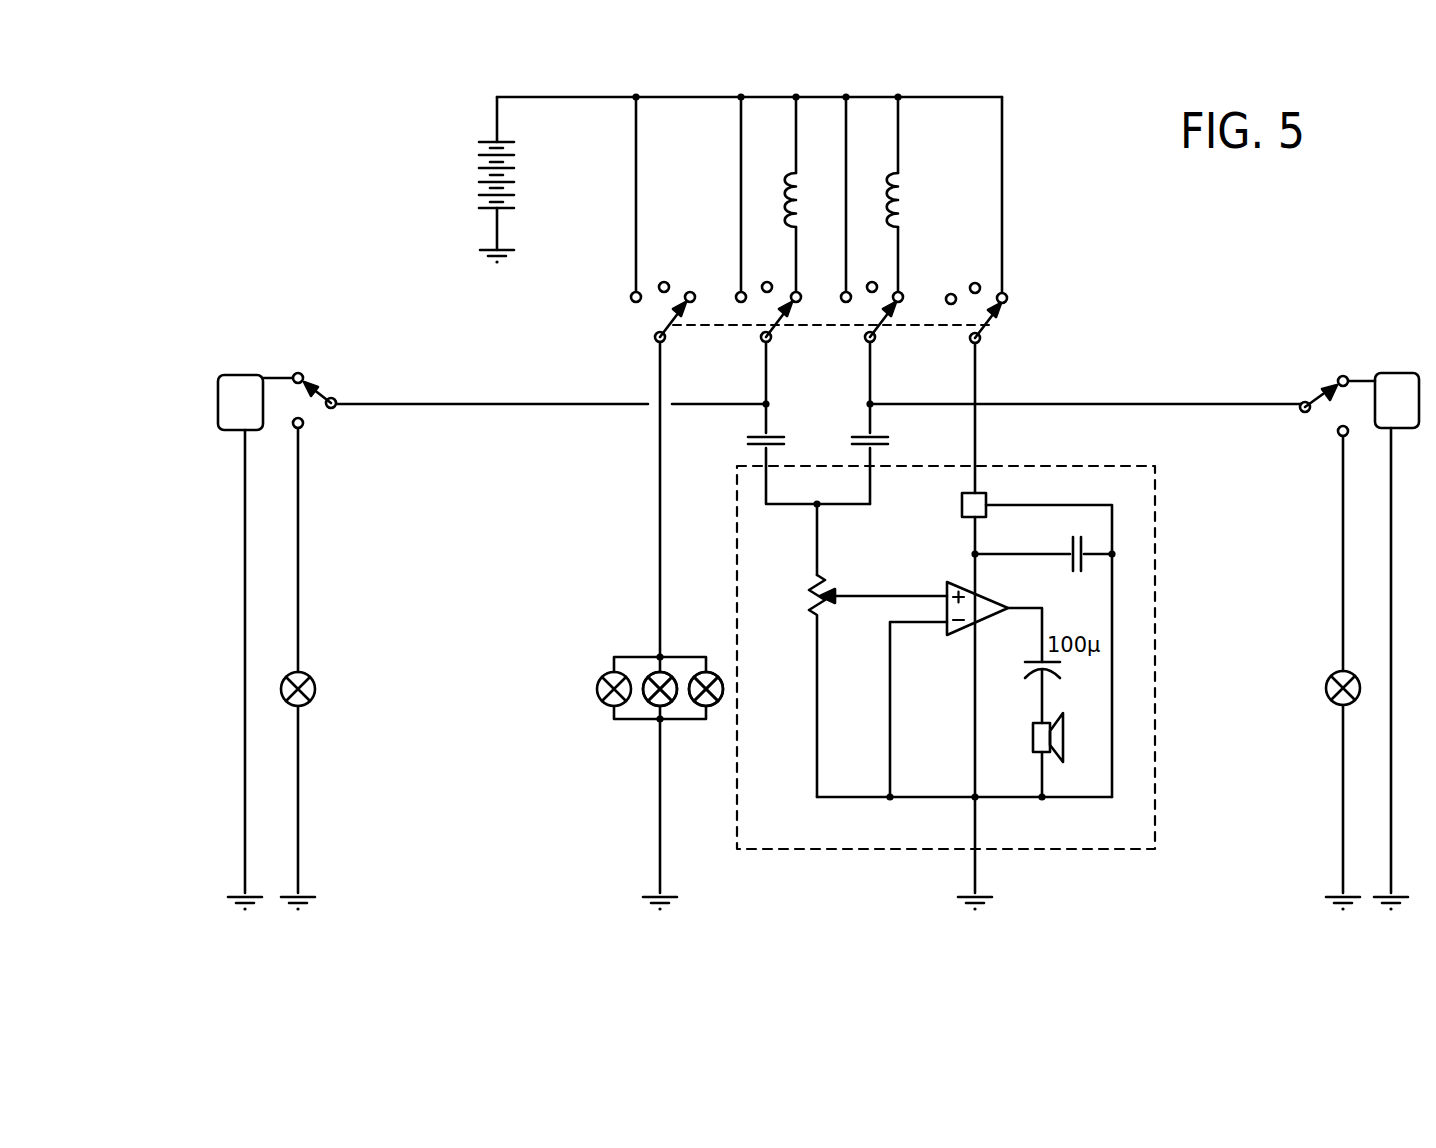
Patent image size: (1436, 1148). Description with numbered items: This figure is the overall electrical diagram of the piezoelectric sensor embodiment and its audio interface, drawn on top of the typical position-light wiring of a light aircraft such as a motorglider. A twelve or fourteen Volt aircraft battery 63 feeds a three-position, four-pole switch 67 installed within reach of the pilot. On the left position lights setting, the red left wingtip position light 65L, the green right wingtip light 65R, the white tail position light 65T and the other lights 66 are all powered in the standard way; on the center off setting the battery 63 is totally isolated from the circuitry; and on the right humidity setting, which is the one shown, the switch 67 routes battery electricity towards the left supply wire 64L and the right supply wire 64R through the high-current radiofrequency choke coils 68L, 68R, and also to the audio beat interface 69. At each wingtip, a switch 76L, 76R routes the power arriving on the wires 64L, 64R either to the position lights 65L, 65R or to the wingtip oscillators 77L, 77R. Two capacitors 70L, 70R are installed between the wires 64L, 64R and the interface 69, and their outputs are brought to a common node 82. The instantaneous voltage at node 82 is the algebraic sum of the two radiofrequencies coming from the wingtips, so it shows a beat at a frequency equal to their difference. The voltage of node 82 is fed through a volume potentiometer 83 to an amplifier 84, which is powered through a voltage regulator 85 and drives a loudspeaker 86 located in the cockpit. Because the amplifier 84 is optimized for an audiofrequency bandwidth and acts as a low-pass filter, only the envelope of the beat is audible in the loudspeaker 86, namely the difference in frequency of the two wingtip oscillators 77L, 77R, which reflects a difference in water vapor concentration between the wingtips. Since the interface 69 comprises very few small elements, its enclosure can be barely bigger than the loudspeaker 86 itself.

The aircraft battery 63 is at (480, 182).
The left high-current radiofrequency choke coil 68L is at (786, 203).
The right high-current radiofrequency choke coil 68R is at (943, 185).
The 3-position 4-pole switch 67 is at (990, 320).
The left supply wire 64L is at (512, 408).
The right supply wire 64R is at (1240, 407).
The left switch 76L is at (316, 386).
The right switch 76R is at (1322, 399).
The left wingtip oscillator 77L is at (243, 372).
The right wingtip oscillator 77R is at (1395, 370).
The red left wingtip position light 65L is at (315, 689).
The green right wingtip light 65R is at (1326, 688).
The white tail position light 65T is at (607, 705).
The other lights 66 is at (667, 705).
The left capacitor 70L is at (760, 436).
The right capacitor 70R is at (878, 436).
The audio beat interface 69 is at (1157, 783).
The common node 82 is at (821, 508).
The volume potentiometer 83 is at (807, 603).
The amplifier 84 is at (960, 638).
The voltage regulator 85 is at (960, 506).
The loudspeaker 86 is at (1032, 737).